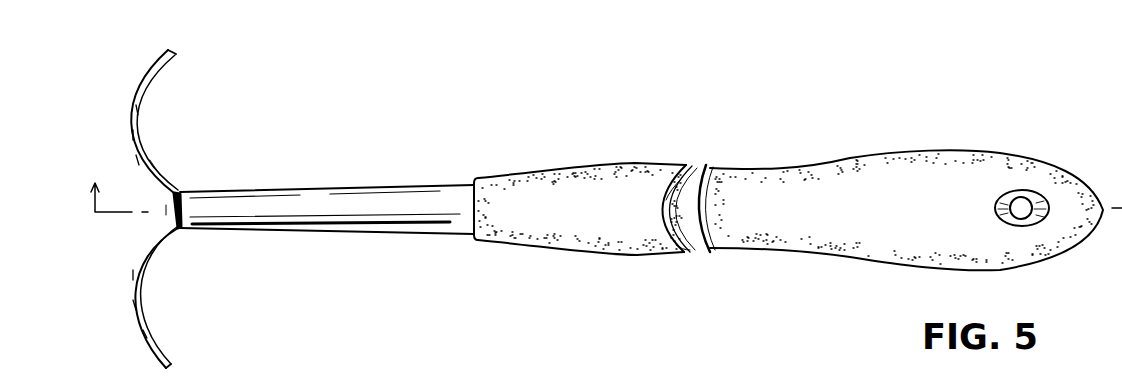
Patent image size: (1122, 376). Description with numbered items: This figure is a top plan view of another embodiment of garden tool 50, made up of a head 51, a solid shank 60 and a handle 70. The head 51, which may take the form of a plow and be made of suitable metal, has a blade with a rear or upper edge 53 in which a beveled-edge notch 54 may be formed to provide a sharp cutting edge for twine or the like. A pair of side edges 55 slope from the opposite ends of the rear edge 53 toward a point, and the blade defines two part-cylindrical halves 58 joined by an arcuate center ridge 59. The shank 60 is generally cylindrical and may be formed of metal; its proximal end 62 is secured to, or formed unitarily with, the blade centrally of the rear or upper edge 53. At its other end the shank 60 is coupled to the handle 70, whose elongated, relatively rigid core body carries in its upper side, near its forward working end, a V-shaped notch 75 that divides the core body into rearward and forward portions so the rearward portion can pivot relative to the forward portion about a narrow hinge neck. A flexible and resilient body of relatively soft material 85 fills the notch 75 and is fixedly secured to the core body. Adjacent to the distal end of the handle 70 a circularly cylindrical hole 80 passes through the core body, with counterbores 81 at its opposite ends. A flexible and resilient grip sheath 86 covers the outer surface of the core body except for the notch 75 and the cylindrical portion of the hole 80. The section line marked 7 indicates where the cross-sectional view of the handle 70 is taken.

The garden tool 50 is at (543, 80).
The head 51 is at (108, 56).
The rear or upper edge 53 is at (141, 152).
The beveled-edge notch 54 is at (143, 354).
The side edges 55 is at (173, 53).
The part-cylindrical halves 58 is at (144, 115).
The arcuate center ridge 59 is at (166, 210).
The shank 60 is at (408, 175).
The proximal end 62 is at (178, 192).
The handle 70 is at (890, 146).
The notch 75 is at (683, 176).
The hole 80 is at (1034, 199).
The counterbores 81 is at (1006, 200).
The body of relatively soft material 85 is at (703, 252).
The grip sheath 86 is at (588, 240).
The section line 7- 7 is at (605, 177).